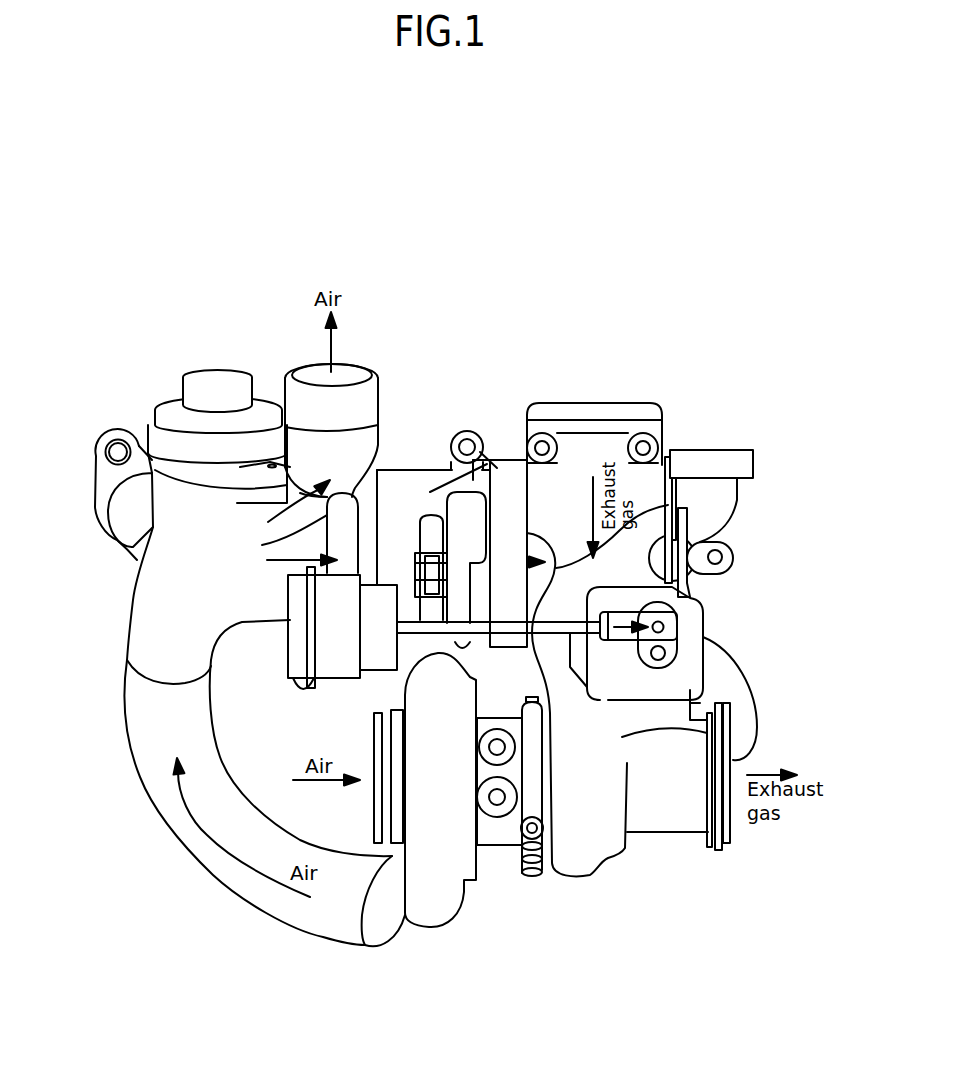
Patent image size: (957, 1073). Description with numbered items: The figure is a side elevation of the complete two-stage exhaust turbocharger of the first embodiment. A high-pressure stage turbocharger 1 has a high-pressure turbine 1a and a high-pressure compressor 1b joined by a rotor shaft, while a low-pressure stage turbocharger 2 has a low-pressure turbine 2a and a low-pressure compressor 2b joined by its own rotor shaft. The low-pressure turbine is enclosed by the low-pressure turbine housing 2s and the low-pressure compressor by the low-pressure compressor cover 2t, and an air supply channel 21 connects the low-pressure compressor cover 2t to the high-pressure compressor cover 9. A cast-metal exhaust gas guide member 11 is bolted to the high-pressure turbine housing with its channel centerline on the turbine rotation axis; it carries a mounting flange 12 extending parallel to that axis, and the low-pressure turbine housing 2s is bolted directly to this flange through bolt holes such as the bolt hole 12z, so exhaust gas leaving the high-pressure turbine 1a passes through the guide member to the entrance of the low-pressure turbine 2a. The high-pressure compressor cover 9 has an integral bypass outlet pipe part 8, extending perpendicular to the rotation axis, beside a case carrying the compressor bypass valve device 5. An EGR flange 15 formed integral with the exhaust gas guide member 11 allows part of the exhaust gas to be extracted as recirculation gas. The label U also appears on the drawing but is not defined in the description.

The high-pressure stage turbocharger 1 is at (428, 452).
The high-pressure turbine 1a is at (479, 484).
The high-pressure compressor 1b is at (336, 476).
The low-pressure stage turbocharger 2 is at (540, 902).
The low-pressure turbine 2a is at (628, 878).
The low-pressure compressor 2b is at (474, 932).
The low-pressure turbine housing 2s is at (717, 733).
The low-pressure compressor cover 2t is at (423, 905).
The compressor bypass valve device 5 is at (166, 364).
The bypass outlet pipe part 8 is at (294, 398).
The high-pressure compressor cover 9 is at (140, 603).
The exhaust gas guide member 11 is at (505, 505).
The mounting flange 12 is at (592, 415).
The bolt hole 12z is at (645, 448).
The EGR flange 15 is at (702, 468).
The air supply channel 21 is at (152, 778).
The U-shaped duct portion U is at (252, 932).